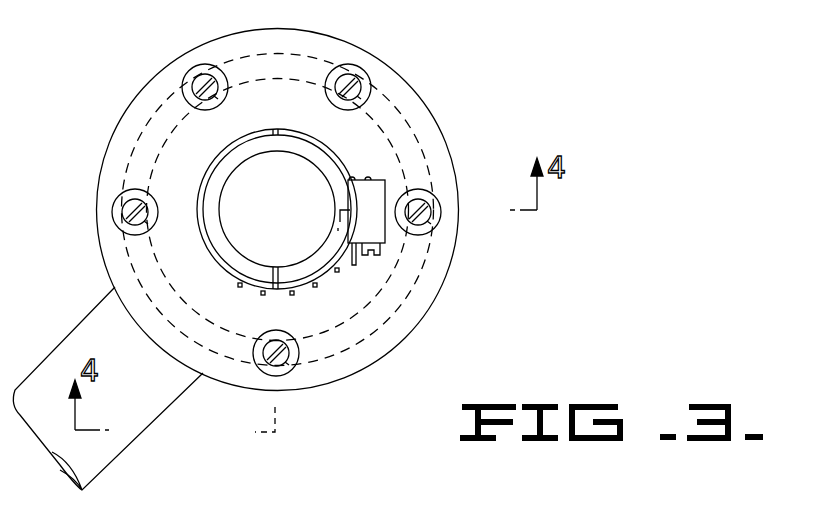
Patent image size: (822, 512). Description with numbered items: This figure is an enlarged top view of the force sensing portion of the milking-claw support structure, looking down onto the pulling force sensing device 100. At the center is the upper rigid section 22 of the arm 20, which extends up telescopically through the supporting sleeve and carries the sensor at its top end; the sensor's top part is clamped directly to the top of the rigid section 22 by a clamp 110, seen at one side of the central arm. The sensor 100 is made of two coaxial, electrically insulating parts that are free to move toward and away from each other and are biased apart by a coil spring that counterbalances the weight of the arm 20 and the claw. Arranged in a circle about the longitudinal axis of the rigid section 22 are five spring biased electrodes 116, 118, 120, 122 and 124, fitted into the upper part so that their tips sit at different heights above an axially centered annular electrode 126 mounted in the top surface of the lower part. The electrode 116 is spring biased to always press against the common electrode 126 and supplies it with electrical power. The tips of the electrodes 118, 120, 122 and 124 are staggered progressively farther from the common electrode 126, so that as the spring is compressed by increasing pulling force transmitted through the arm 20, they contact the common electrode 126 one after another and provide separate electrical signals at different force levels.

The arm 20 is at (108, 462).
The upper rigid section 22 is at (235, 180).
The pulling force sensing device 100 is at (437, 303).
The clamp 110 is at (377, 180).
The spring biased electrode 116 is at (283, 364).
The spring biased electrode 118 is at (125, 204).
The spring biased electrode 120 is at (197, 78).
The spring biased electrode 122 is at (362, 80).
The spring biased electrode 124 is at (432, 202).
The annular electrode 126 is at (367, 330).